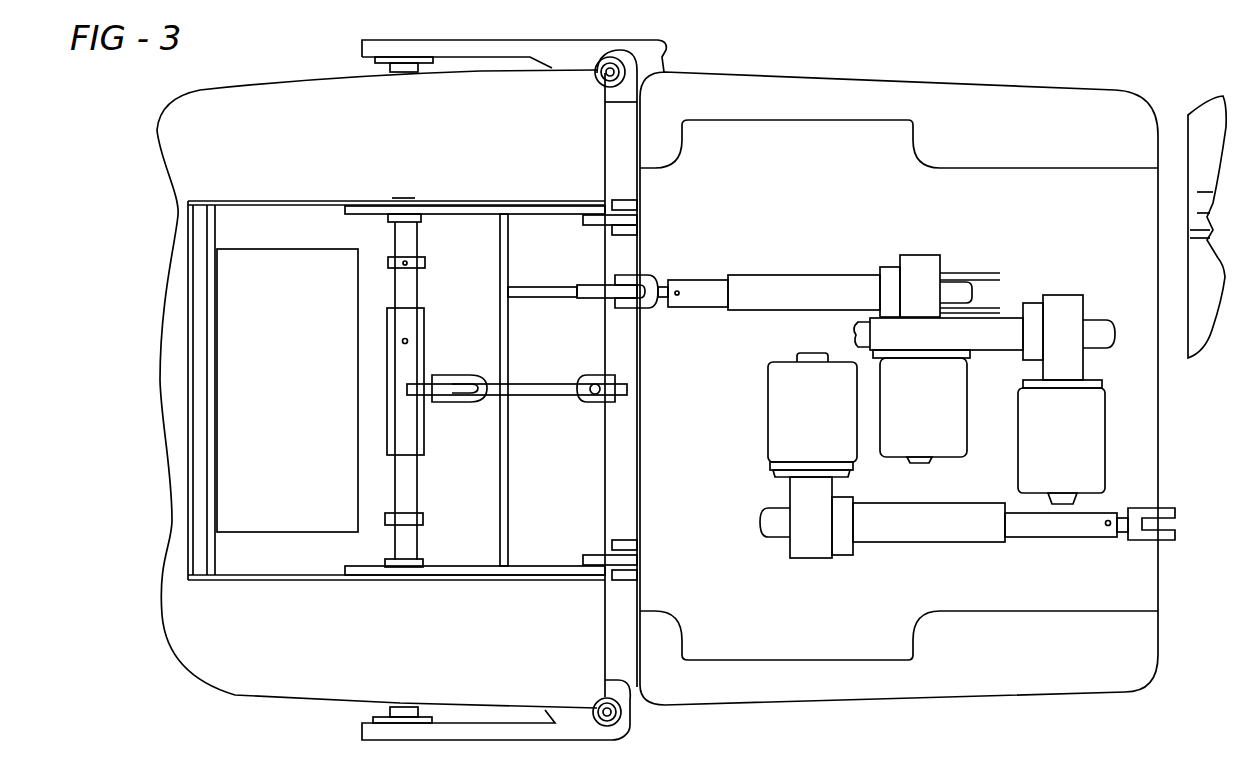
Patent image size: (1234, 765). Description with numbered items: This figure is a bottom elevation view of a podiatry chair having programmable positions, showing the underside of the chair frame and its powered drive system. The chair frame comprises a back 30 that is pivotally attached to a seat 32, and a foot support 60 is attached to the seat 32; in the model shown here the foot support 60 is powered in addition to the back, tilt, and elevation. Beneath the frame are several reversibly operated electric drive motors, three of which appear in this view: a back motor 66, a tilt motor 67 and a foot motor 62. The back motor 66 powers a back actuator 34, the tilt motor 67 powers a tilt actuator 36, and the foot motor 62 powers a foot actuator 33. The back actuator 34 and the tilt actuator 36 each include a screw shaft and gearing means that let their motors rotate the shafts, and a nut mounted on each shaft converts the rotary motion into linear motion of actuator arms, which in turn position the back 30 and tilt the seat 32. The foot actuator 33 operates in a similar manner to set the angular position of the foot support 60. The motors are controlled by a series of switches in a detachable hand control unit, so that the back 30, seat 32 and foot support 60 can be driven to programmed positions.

The back 30 is at (244, 84).
The seat 32 is at (948, 82).
The foot actuator 33 is at (825, 558).
The back actuator 34 is at (917, 255).
The tilt actuator 36 is at (1063, 295).
The foot support 60 is at (1208, 92).
The foot motor 62 is at (768, 440).
The back motor 66 is at (948, 458).
The tilt motor 67 is at (1105, 462).